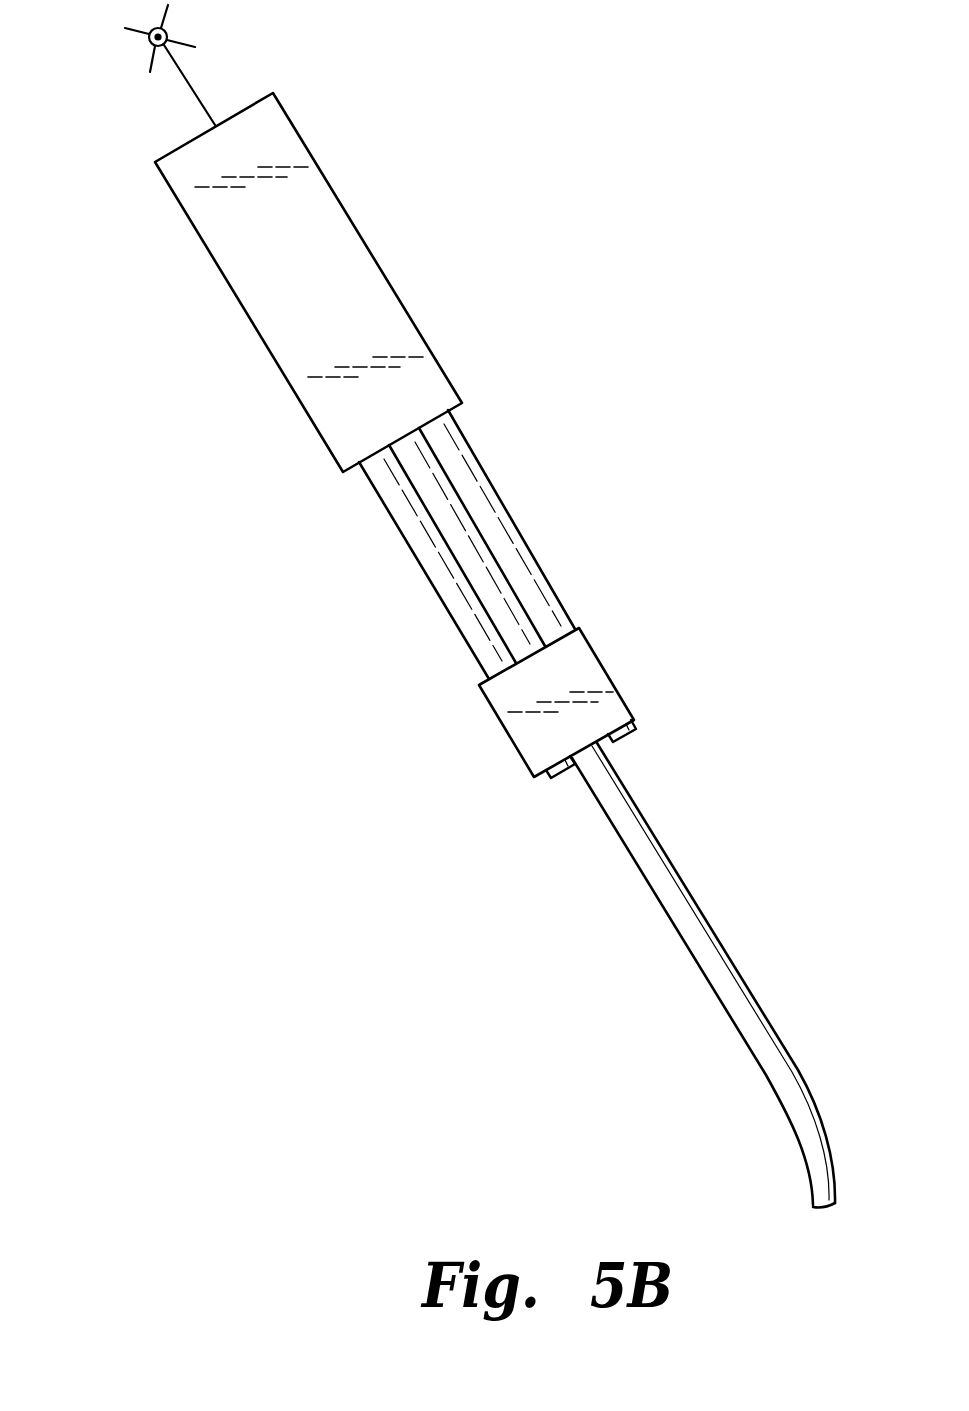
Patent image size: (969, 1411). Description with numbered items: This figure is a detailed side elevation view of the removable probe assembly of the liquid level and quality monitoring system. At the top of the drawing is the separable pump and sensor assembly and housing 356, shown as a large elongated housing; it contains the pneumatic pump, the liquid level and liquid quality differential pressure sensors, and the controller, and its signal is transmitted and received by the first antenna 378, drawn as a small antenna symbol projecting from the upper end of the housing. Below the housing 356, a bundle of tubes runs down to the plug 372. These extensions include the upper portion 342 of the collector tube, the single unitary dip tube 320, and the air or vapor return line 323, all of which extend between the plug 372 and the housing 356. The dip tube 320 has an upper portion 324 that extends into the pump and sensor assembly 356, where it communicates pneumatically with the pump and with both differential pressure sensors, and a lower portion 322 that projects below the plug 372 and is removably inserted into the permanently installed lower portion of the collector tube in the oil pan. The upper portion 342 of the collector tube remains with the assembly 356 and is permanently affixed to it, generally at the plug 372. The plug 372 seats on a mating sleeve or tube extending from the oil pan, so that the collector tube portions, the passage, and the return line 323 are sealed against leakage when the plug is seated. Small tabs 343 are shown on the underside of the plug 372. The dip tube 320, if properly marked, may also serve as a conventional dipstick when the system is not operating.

The first antenna 378 is at (182, 78).
The pump and sensor assembly and housing 356 is at (237, 300).
The air or vapor return line 323 is at (445, 544).
The upper portion of the dip tube 324 is at (418, 497).
The upper portion of the collector tube 342 is at (422, 569).
The plug 372 is at (507, 733).
The tabs 343 is at (548, 785).
The dip tube 320 is at (703, 975).
The lower portion of the dip tube 322 is at (703, 974).